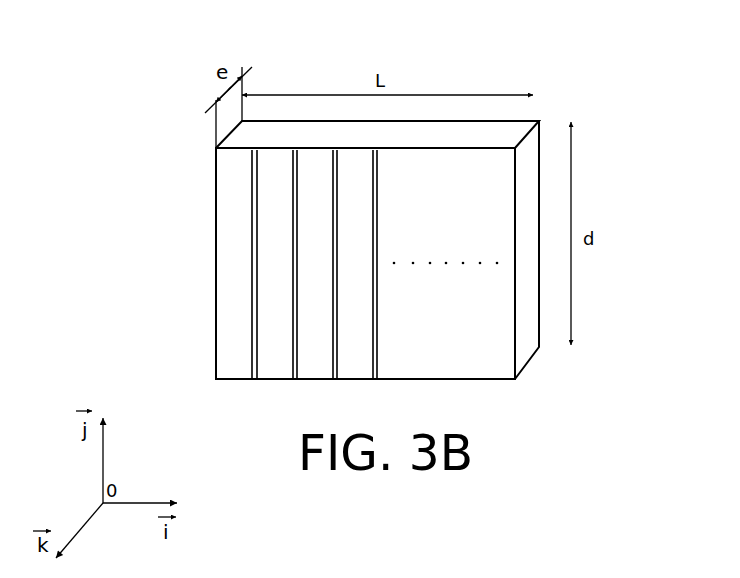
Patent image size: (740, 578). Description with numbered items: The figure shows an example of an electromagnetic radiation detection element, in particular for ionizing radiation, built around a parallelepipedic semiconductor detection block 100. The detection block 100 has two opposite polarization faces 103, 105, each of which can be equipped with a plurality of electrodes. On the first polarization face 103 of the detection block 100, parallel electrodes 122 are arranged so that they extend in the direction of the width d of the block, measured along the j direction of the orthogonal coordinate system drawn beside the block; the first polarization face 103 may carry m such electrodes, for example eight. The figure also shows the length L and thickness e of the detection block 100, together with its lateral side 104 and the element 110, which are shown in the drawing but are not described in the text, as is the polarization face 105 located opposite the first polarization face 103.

The detection block 100 is at (203, 242).
The substrate block 110 is at (205, 298).
The parallel electrodes 122 is at (295, 379).
The first polarization face 103 is at (497, 340).
The lateral face 104 is at (528, 192).
The polarization face 105 is at (542, 120).